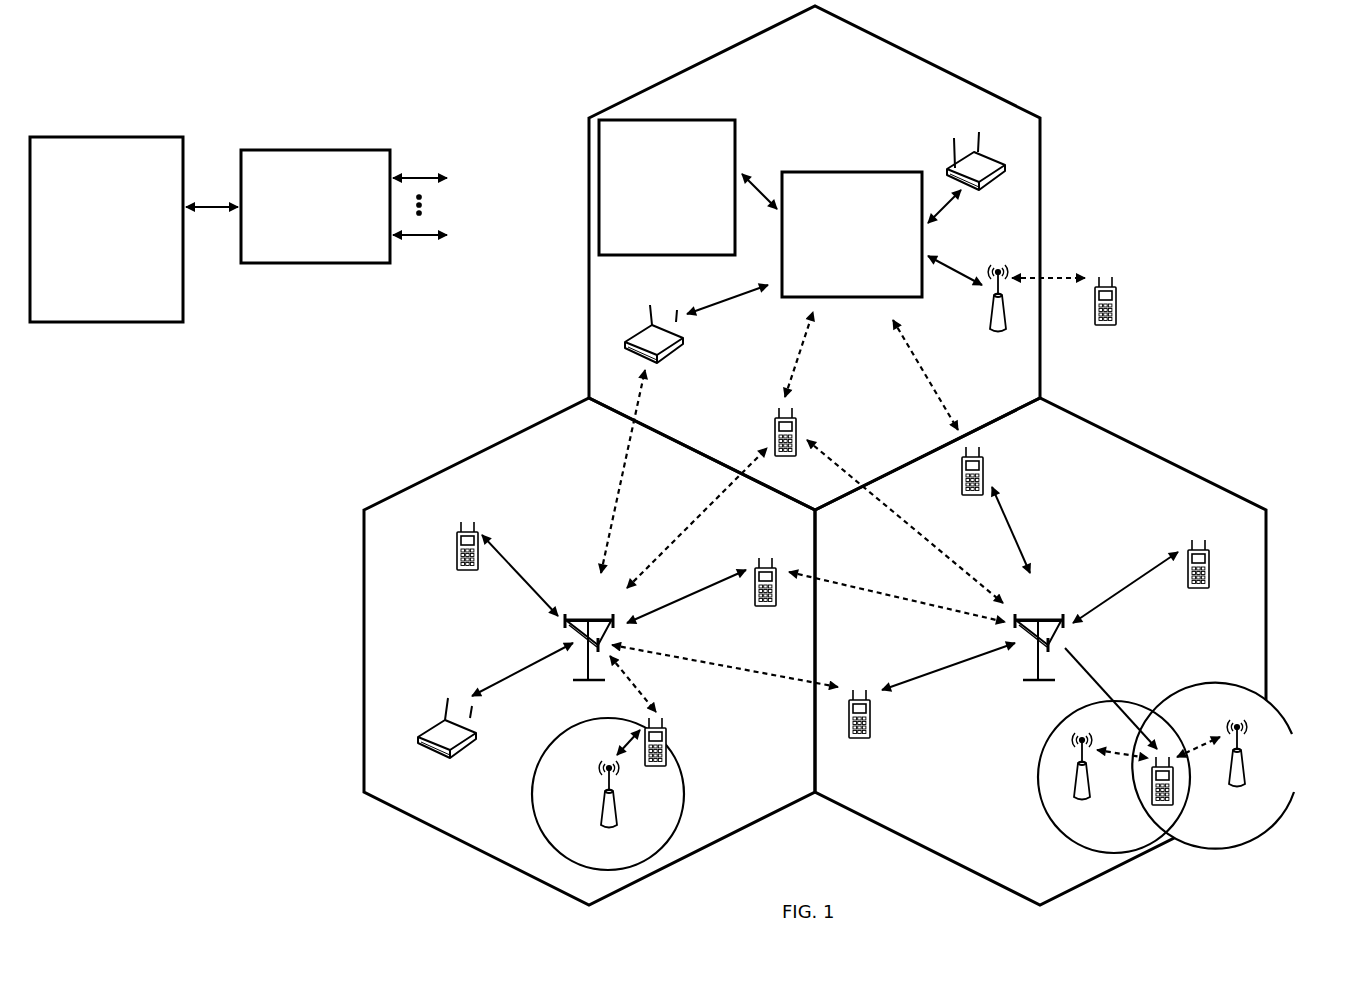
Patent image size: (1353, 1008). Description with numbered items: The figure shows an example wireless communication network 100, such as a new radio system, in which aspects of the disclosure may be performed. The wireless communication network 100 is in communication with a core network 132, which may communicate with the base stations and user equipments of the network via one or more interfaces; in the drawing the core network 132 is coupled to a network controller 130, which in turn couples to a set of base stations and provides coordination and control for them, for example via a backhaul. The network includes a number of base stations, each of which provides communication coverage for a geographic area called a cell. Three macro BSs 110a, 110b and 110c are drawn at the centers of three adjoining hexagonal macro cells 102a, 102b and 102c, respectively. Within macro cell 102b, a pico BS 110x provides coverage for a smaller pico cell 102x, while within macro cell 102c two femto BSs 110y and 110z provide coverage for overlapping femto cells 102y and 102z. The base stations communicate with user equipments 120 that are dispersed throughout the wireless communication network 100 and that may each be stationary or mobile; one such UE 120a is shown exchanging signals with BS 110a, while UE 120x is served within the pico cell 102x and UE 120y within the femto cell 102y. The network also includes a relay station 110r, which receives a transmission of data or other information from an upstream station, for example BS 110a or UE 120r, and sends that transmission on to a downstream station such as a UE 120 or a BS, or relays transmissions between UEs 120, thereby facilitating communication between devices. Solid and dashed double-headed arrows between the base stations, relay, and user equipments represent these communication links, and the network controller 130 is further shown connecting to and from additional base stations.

The wireless communication network 100 is at (1193, 79).
The macro cell 102a is at (942, 46).
The macro cell 102b is at (477, 453).
The macro cell 102c is at (1163, 437).
The pico cell 102x is at (554, 736).
The femto cell 102y is at (1044, 738).
The femto cell 102z is at (1215, 678).
The macro BS 110a is at (873, 172).
The macro BS 110b is at (585, 620).
The macro BS 110c is at (1037, 620).
The relay station 110r is at (985, 318).
The pico BS 110x is at (620, 818).
The femto BS 110y is at (1092, 795).
The femto BS 110z is at (1245, 783).
The user equipment (UE) 120 is at (647, 323).
The UE 120a is at (723, 118).
The UE 120r is at (1115, 313).
The UE 120x is at (680, 726).
The UE 120y is at (1152, 800).
The network controller 130 is at (310, 148).
The core network 132 is at (120, 135).